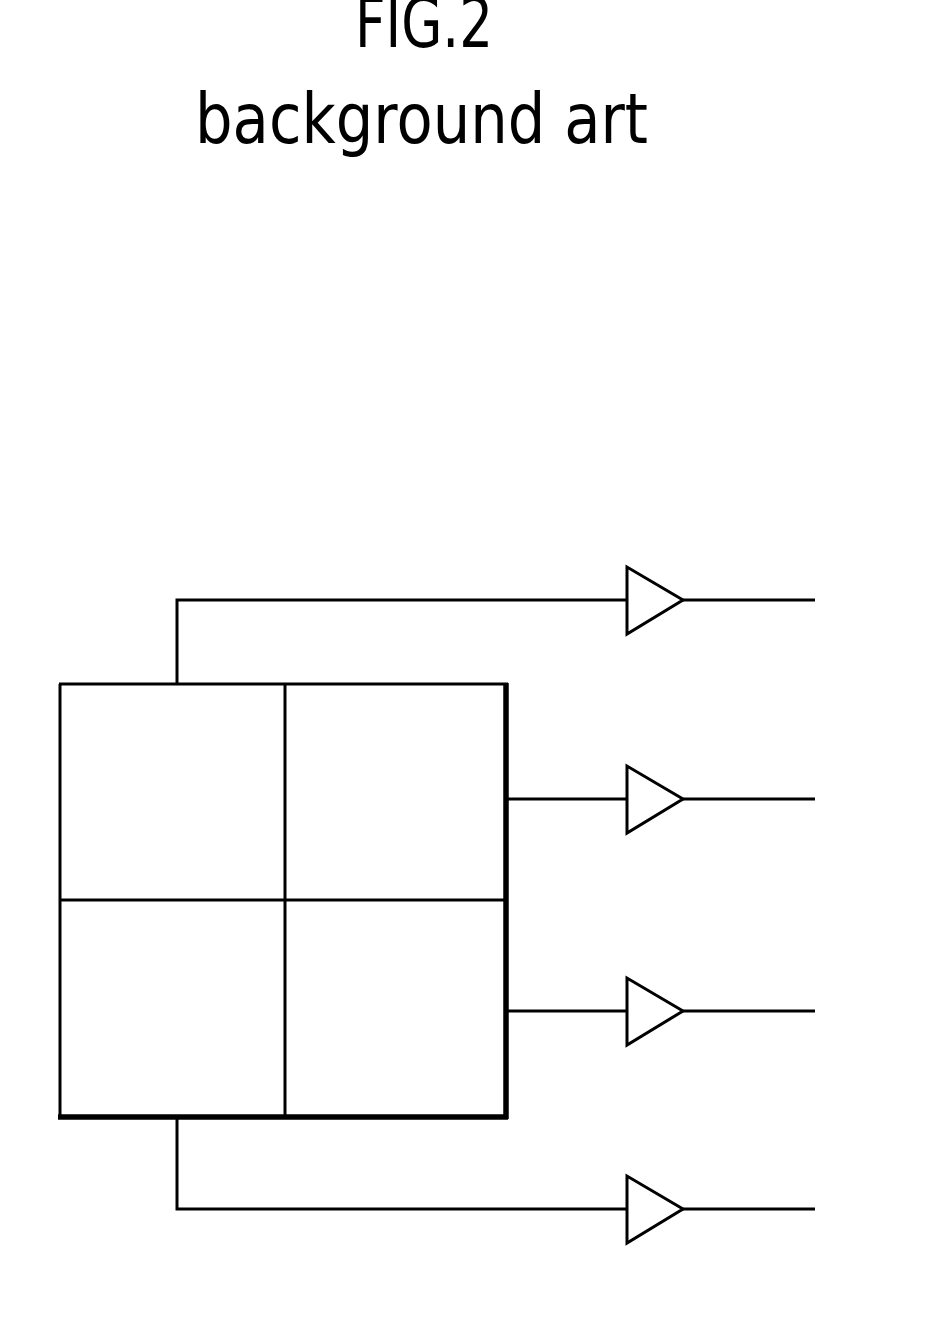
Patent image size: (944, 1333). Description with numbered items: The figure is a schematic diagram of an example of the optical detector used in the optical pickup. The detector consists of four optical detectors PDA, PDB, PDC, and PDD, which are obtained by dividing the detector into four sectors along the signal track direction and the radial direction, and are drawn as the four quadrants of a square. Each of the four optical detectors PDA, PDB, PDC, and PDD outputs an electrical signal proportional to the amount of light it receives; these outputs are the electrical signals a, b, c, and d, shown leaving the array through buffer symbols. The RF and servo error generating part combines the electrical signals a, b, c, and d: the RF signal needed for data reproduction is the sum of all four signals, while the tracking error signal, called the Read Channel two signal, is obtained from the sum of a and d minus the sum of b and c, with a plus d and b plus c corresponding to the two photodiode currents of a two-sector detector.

The optical detector PDA is at (175, 799).
The optical detector PDB is at (400, 798).
The optical detector PDC is at (400, 1018).
The optical detector PDD is at (175, 1016).
The electrical signal a is at (518, 625).
The electrical signal b is at (682, 799).
The electrical signal c is at (681, 1011).
The electrical signal d is at (518, 1180).